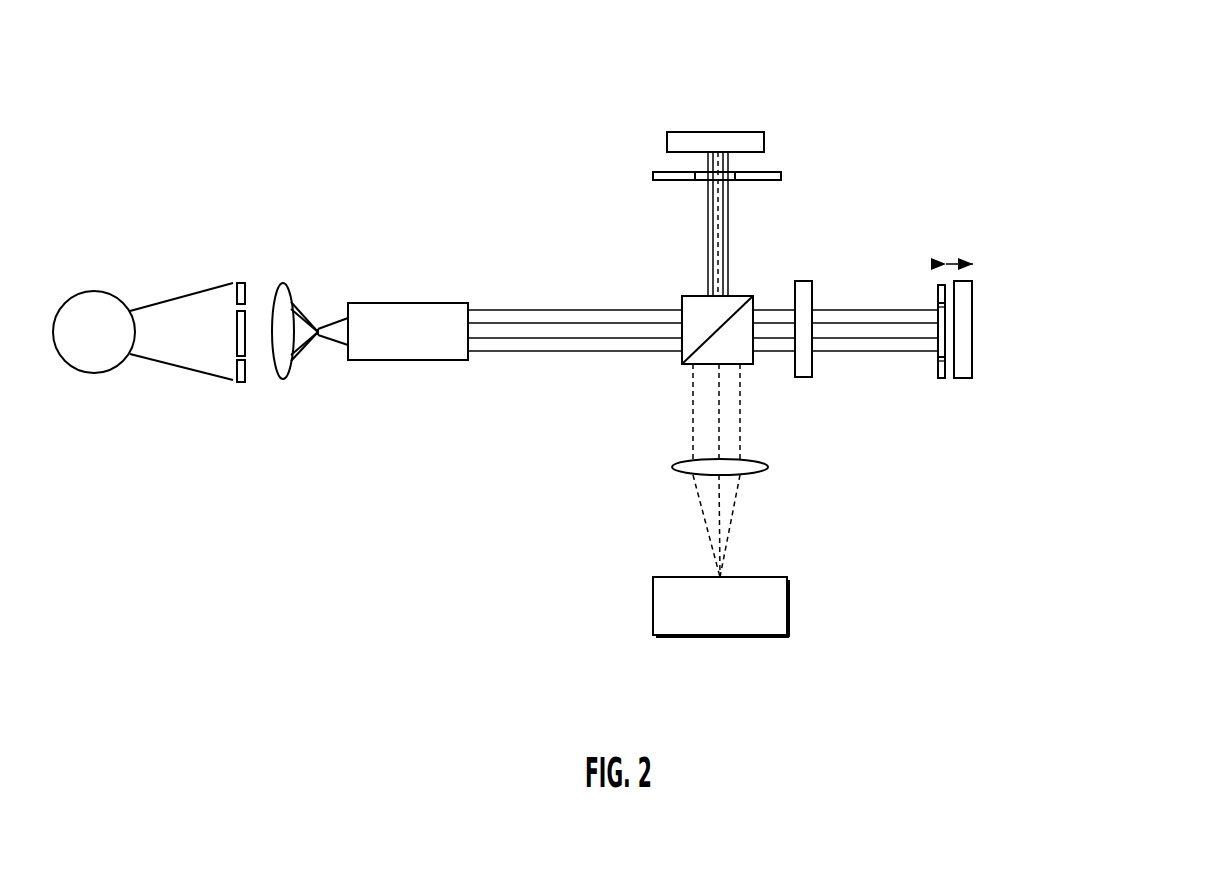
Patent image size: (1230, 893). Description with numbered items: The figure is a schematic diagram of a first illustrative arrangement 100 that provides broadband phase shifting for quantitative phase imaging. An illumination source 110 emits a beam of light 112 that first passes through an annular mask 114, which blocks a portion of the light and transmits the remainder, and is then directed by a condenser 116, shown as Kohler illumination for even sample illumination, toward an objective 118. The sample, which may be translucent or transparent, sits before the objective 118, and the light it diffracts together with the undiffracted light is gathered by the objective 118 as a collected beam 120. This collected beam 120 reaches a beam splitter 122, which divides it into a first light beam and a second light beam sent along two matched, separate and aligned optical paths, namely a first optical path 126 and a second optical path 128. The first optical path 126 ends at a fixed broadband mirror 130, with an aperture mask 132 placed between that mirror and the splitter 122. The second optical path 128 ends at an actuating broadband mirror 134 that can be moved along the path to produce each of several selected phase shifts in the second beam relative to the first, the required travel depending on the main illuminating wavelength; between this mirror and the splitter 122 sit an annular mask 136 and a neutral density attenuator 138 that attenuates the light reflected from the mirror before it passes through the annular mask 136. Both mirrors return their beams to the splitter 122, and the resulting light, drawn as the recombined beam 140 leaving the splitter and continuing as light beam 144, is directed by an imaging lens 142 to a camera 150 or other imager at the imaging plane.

The first illustrative arrangement 100 is at (222, 123).
The illumination source 110 is at (156, 294).
The beam of light 112 is at (203, 347).
The annular mask 114 is at (245, 374).
The condenser 116 is at (353, 297).
The objective 118 is at (430, 342).
The collected beam 120 is at (547, 351).
The beam splitter 122 is at (648, 288).
The first optical path 126 is at (1003, 172).
The second optical path 128 is at (1003, 172).
The fixed broadband mirror 130 is at (813, 113).
The aperture mask 132 is at (653, 176).
The actuating broadband mirror 134 is at (1098, 388).
The annular mask 136 is at (943, 378).
The neutral density attenuator 138 is at (860, 472).
The recombined beam 140 is at (693, 440).
The imaging lens 142 is at (672, 467).
The light beam 144 is at (733, 497).
The camera 150 is at (768, 619).